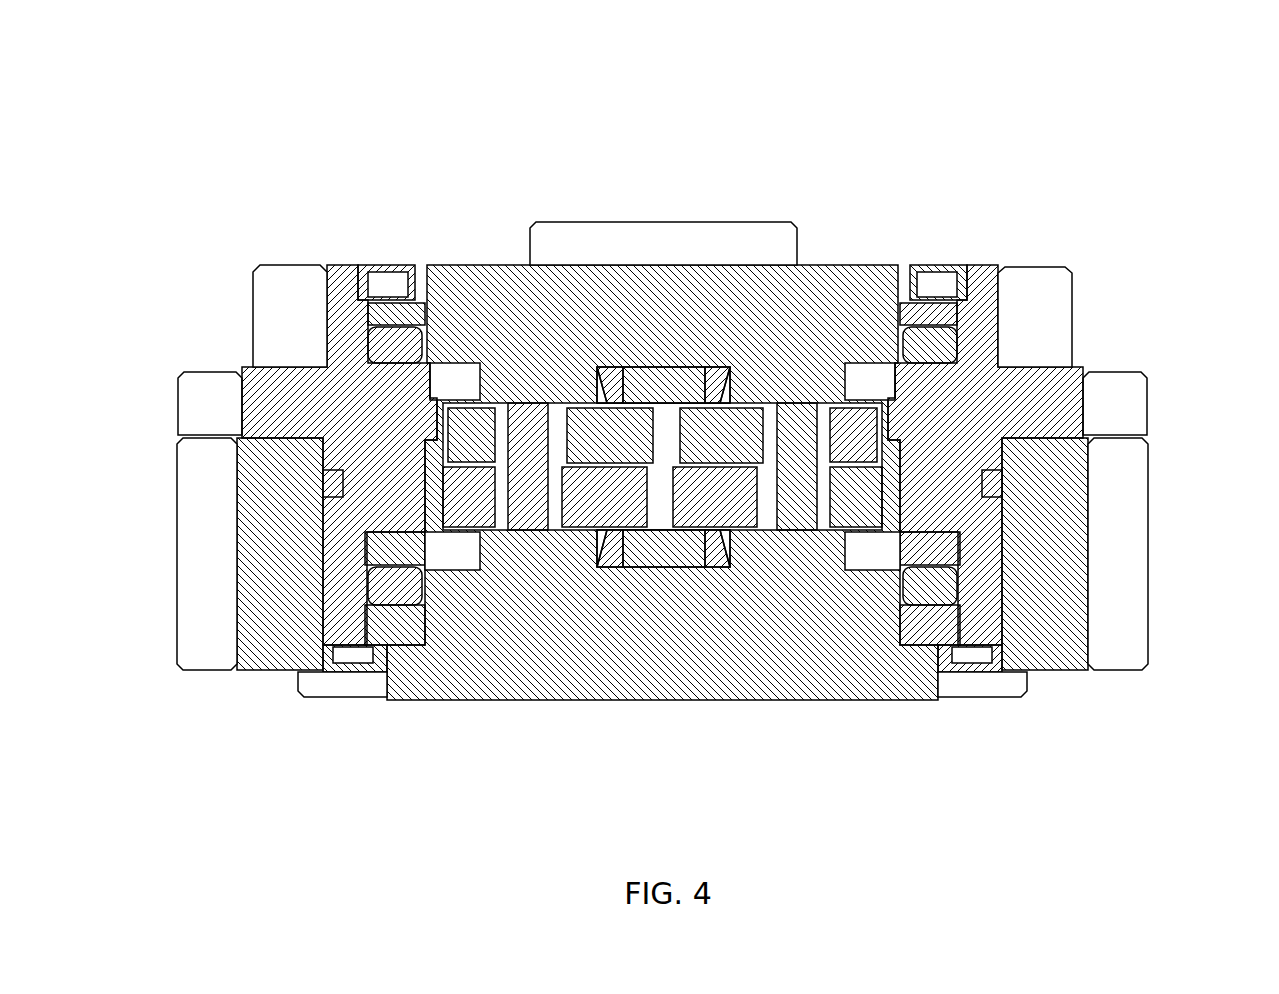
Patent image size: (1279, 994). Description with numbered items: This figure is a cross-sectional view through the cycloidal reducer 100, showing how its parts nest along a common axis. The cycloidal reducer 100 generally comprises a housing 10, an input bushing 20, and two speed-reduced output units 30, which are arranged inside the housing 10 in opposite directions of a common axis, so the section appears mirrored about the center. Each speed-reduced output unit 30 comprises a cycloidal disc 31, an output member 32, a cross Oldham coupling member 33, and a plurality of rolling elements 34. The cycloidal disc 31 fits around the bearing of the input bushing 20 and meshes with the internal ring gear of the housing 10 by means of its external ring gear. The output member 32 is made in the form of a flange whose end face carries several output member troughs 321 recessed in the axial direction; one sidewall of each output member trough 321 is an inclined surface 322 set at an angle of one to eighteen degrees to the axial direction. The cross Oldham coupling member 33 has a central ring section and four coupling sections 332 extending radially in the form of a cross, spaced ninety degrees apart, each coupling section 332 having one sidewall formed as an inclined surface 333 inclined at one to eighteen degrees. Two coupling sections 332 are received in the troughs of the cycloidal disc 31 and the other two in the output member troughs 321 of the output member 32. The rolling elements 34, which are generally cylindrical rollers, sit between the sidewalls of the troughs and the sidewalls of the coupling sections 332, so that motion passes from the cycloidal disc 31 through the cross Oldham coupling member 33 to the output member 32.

The cycloidal reducer 100 is at (1197, 115).
The housing 10 is at (1035, 392).
The input bushing 20 is at (751, 212).
The speed-reduced output unit 30 is at (420, 142).
The cycloidal disc 31 is at (587, 507).
The output member 32 is at (637, 330).
The output member trough 321 is at (662, 357).
The inclined surface 322 is at (733, 388).
The cross Oldham coupling member 33 is at (596, 152).
The coupling section 332 is at (597, 368).
The inclined surface 333 is at (687, 367).
The rolling element 34 is at (565, 385).